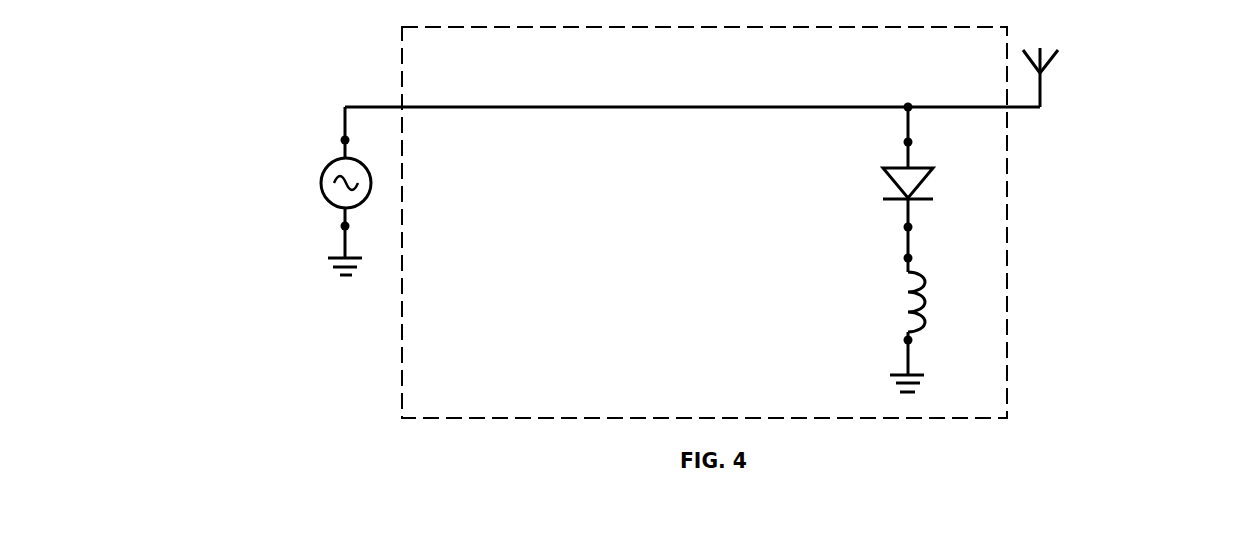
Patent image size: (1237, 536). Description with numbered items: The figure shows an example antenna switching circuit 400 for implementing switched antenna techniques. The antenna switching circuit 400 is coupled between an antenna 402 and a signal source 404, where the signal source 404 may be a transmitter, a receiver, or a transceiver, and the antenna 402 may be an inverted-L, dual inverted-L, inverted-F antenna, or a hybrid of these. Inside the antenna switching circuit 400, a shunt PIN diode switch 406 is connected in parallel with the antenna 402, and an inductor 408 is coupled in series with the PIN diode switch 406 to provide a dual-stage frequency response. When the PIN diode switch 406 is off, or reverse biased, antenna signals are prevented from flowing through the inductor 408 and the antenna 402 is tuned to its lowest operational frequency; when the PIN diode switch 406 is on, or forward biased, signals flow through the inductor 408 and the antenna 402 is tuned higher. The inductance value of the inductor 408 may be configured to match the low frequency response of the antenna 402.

The antenna switching circuit 400 is at (704, 222).
The antenna 402 is at (1103, 77).
The signal source 404 is at (318, 155).
The PIN diode switch 406 is at (877, 182).
The inductor 408 is at (888, 290).